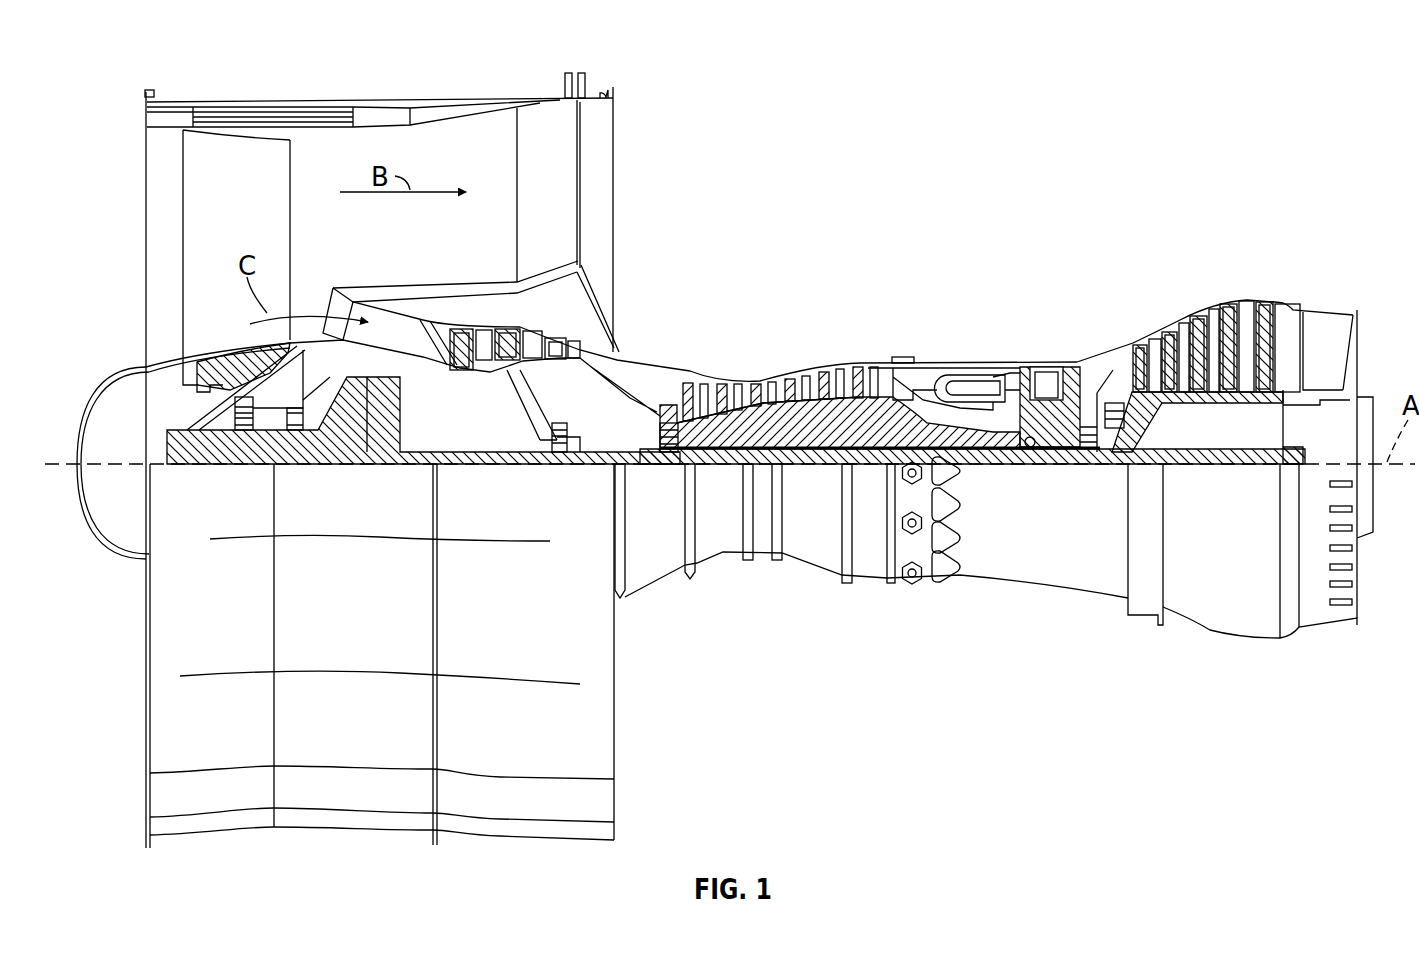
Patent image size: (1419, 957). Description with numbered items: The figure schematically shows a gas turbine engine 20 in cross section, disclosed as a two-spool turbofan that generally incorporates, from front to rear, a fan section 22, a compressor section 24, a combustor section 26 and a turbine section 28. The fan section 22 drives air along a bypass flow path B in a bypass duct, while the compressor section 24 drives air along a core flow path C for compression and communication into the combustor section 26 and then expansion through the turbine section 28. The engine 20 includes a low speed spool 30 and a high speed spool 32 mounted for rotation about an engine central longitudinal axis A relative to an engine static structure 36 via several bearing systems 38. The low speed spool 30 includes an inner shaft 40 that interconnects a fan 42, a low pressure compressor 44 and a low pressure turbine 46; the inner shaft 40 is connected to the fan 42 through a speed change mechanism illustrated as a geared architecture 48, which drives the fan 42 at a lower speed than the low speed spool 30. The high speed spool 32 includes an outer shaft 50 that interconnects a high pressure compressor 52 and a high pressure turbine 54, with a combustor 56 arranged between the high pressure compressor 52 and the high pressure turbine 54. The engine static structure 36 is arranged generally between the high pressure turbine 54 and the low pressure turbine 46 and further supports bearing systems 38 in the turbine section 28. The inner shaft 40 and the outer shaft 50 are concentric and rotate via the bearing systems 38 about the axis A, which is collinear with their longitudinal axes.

The gas turbine engine 20 is at (1222, 147).
The fan section 22 is at (336, 88).
The compressor section 24 is at (802, 324).
The combustor section 26 is at (958, 312).
The turbine section 28 is at (1135, 299).
The low speed spool 30 is at (819, 472).
The high speed spool 32 is at (905, 357).
The engine static structure 36 is at (868, 585).
The bearing systems 38 is at (231, 464).
The inner shaft 40 is at (643, 465).
The fan 42 is at (249, 236).
The low pressure compressor 44 is at (530, 337).
The low pressure turbine 46 is at (1208, 328).
The geared architecture 48 is at (392, 450).
The outer shaft 50 is at (1040, 465).
The high pressure compressor 52 is at (792, 423).
The high pressure turbine 54 is at (1046, 367).
The combustor 56 is at (973, 388).